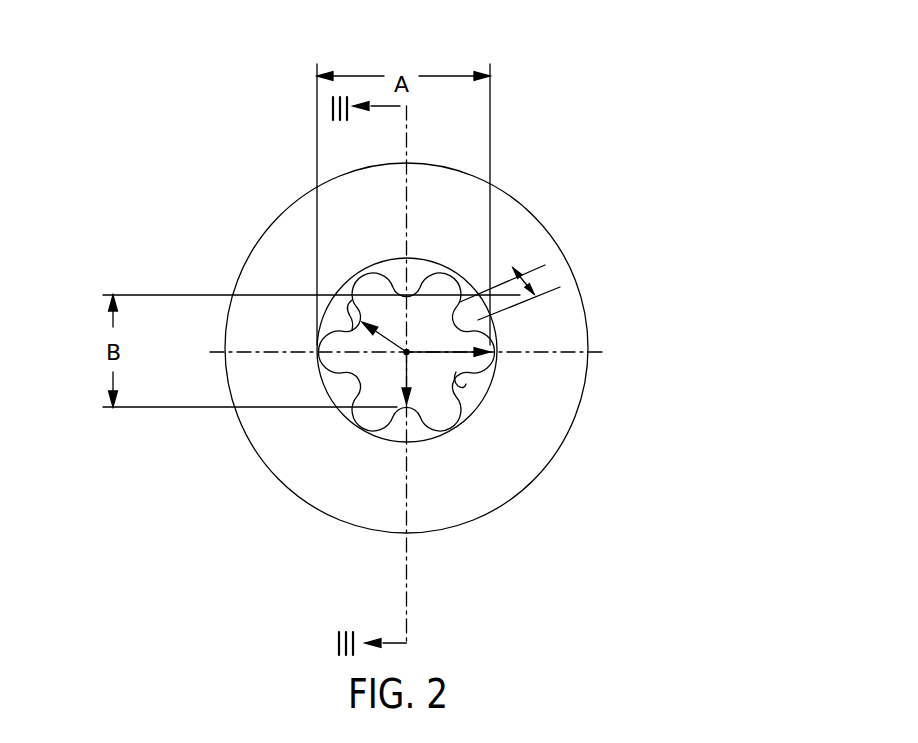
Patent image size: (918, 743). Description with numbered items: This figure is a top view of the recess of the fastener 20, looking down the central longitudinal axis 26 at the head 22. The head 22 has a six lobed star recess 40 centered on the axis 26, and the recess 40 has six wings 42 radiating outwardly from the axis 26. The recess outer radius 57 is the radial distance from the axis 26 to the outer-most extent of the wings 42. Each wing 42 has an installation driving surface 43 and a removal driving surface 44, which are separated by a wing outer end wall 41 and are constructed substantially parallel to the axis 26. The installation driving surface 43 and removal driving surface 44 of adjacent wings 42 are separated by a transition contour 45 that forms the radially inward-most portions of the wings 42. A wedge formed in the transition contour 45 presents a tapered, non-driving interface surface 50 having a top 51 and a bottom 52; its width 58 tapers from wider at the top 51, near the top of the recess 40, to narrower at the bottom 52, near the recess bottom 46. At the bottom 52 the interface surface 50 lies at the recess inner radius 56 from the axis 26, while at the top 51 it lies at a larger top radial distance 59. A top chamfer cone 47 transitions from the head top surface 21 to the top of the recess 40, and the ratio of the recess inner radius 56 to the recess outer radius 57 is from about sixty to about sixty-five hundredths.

The fastener 20 is at (507, 208).
The head top surface 21 is at (293, 220).
The head 22 is at (298, 465).
The central longitudinal axis 26 is at (413, 372).
The six lobed star recess 40 is at (462, 378).
The wing outer end wall 41 is at (445, 280).
The wings 42 is at (318, 377).
The installation driving surface 43 is at (462, 293).
The removal driving surface 44 is at (419, 279).
The transition contour 45 is at (357, 305).
The recess bottom 46 is at (436, 400).
The top chamfer cone 47 is at (316, 316).
The interface surface 50 is at (338, 320).
The top of interface surface 51 is at (403, 441).
The bottom of interface surface 52 is at (457, 305).
The recess inner radius 56 is at (458, 378).
The recess outer radius 57 is at (500, 353).
The width of interface surface 58 is at (537, 287).
The top radial distance 59 is at (384, 275).